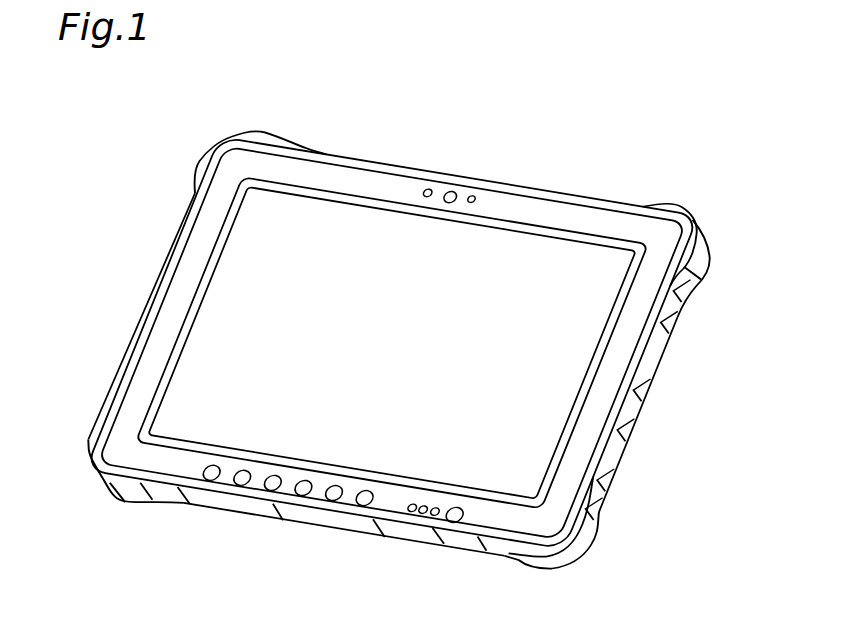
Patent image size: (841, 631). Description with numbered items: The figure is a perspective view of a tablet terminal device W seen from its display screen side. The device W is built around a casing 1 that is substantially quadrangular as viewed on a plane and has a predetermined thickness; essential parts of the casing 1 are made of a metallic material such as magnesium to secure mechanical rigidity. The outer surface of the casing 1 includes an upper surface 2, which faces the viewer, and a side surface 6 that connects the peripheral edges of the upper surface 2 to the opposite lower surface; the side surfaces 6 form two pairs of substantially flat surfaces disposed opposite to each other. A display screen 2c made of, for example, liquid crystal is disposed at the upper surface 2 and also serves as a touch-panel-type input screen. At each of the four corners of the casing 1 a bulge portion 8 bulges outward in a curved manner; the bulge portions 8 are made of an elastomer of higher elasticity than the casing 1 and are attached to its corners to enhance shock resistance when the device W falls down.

The casing 1 is at (160, 280).
The tablet terminal device W is at (556, 184).
The upper surface 2 is at (397, 188).
The display screen 2c is at (313, 222).
The side surface 6 is at (492, 180).
The bulge portion 8 is at (223, 145).